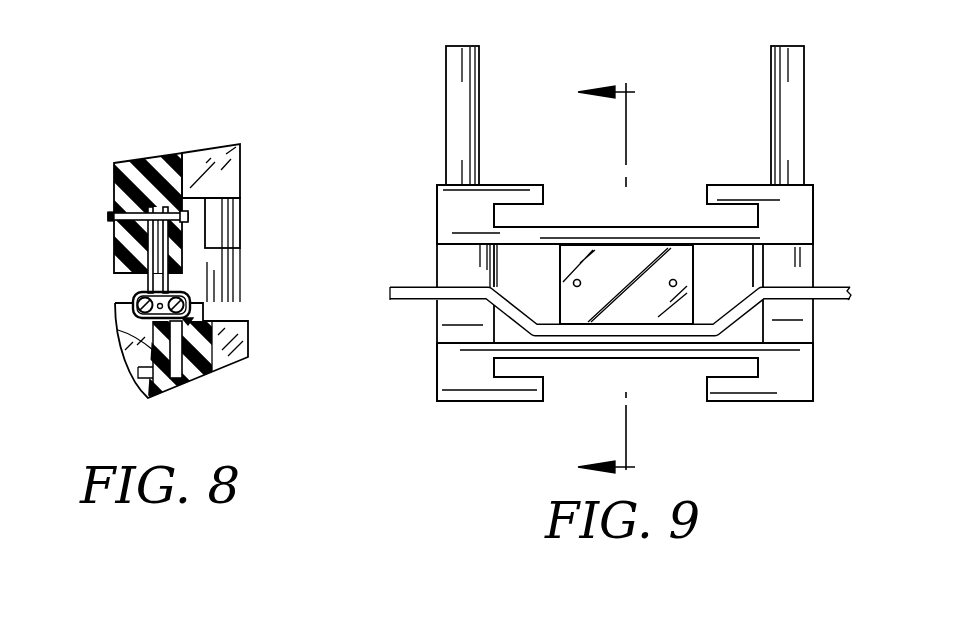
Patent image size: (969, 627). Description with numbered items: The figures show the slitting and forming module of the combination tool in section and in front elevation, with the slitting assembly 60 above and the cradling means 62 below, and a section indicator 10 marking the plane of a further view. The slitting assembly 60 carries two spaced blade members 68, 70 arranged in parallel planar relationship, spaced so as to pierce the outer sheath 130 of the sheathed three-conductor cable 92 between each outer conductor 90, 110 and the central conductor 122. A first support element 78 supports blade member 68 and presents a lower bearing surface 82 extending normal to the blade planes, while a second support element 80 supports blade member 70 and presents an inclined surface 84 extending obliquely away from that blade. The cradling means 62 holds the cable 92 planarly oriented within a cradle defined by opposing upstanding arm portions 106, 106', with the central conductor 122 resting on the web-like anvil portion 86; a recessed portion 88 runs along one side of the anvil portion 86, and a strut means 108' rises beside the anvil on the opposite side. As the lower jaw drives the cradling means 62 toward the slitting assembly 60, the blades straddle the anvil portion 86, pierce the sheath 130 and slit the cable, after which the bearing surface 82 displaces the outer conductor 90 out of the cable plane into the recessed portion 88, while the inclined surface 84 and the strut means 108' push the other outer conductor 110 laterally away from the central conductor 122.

In FIG. 9, the section line 10 is at (625, 279).
In FIG. 8, the slitting assembly 60 is at (110, 166).
In FIG. 9, the slitting assembly 60 is at (820, 192).
In FIG. 8, the cradling means 62 is at (175, 395).
In FIG. 9, the cradling means 62 is at (824, 373).
In FIG. 8, the blade member 68 is at (106, 272).
In FIG. 8, the blade member 70 is at (183, 268).
In FIG. 8, the first support element 78 is at (112, 229).
In FIG. 8, the second support element 80 is at (180, 243).
In FIG. 8, the lower bearing surface 82 is at (120, 273).
In FIG. 8, the inclined surface 84 is at (232, 262).
In FIG. 8, the anvil portion 86 is at (130, 358).
In FIG. 8, the recessed portion 88 is at (145, 372).
In FIG. 8, the outer conductor 90 is at (133, 301).
In FIG. 8, the cable 92 is at (227, 296).
In FIG. 9, the cable 92 is at (838, 286).
In FIG. 8, the upstanding arm portion 106 is at (81, 321).
In FIG. 8, the upstanding arm portion 106' is at (259, 321).
In FIG. 8, the strut means 108' is at (246, 370).
In FIG. 8, the outer conductor 110 is at (200, 280).
In FIG. 8, the central conductor 122 is at (152, 337).
In FIG. 8, the outer sheath 130 is at (135, 296).